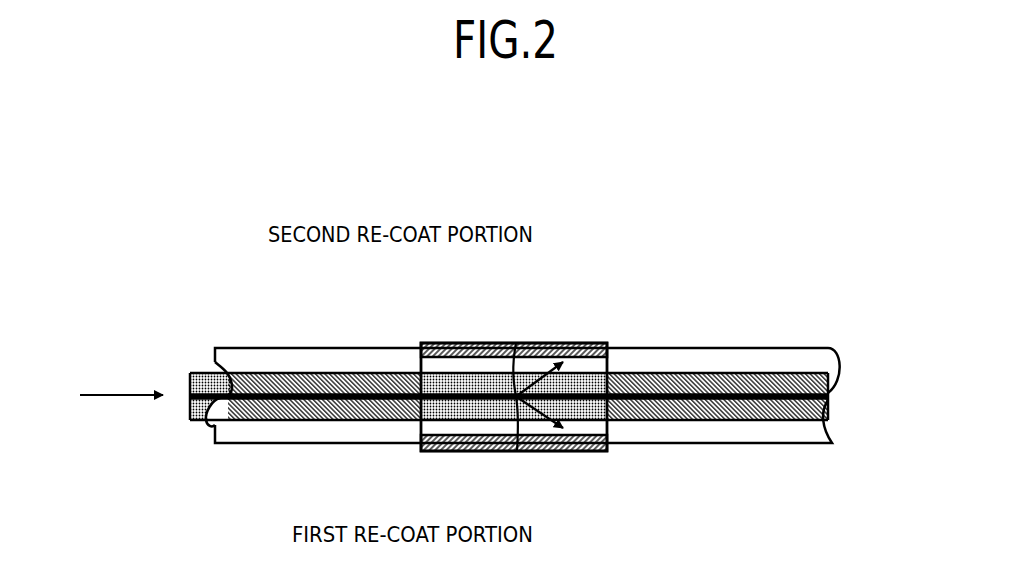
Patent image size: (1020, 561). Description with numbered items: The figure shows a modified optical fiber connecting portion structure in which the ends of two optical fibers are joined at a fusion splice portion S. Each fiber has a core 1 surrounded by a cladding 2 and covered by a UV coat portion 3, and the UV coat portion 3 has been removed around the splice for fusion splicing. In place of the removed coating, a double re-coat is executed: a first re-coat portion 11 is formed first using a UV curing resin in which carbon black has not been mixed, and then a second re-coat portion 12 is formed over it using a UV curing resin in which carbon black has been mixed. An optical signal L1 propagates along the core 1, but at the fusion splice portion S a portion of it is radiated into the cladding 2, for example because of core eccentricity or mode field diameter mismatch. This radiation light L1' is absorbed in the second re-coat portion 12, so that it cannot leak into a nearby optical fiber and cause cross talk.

The core 1 is at (190, 398).
The cladding 2 is at (205, 373).
The UV coat portion 3 is at (305, 360).
The first re-coat portion 11 is at (447, 427).
The second re-coat portion 12 is at (440, 343).
The fusion splice portion S is at (521, 343).
The optical signal L1 is at (121, 379).
The radiation light L1' is at (566, 359).